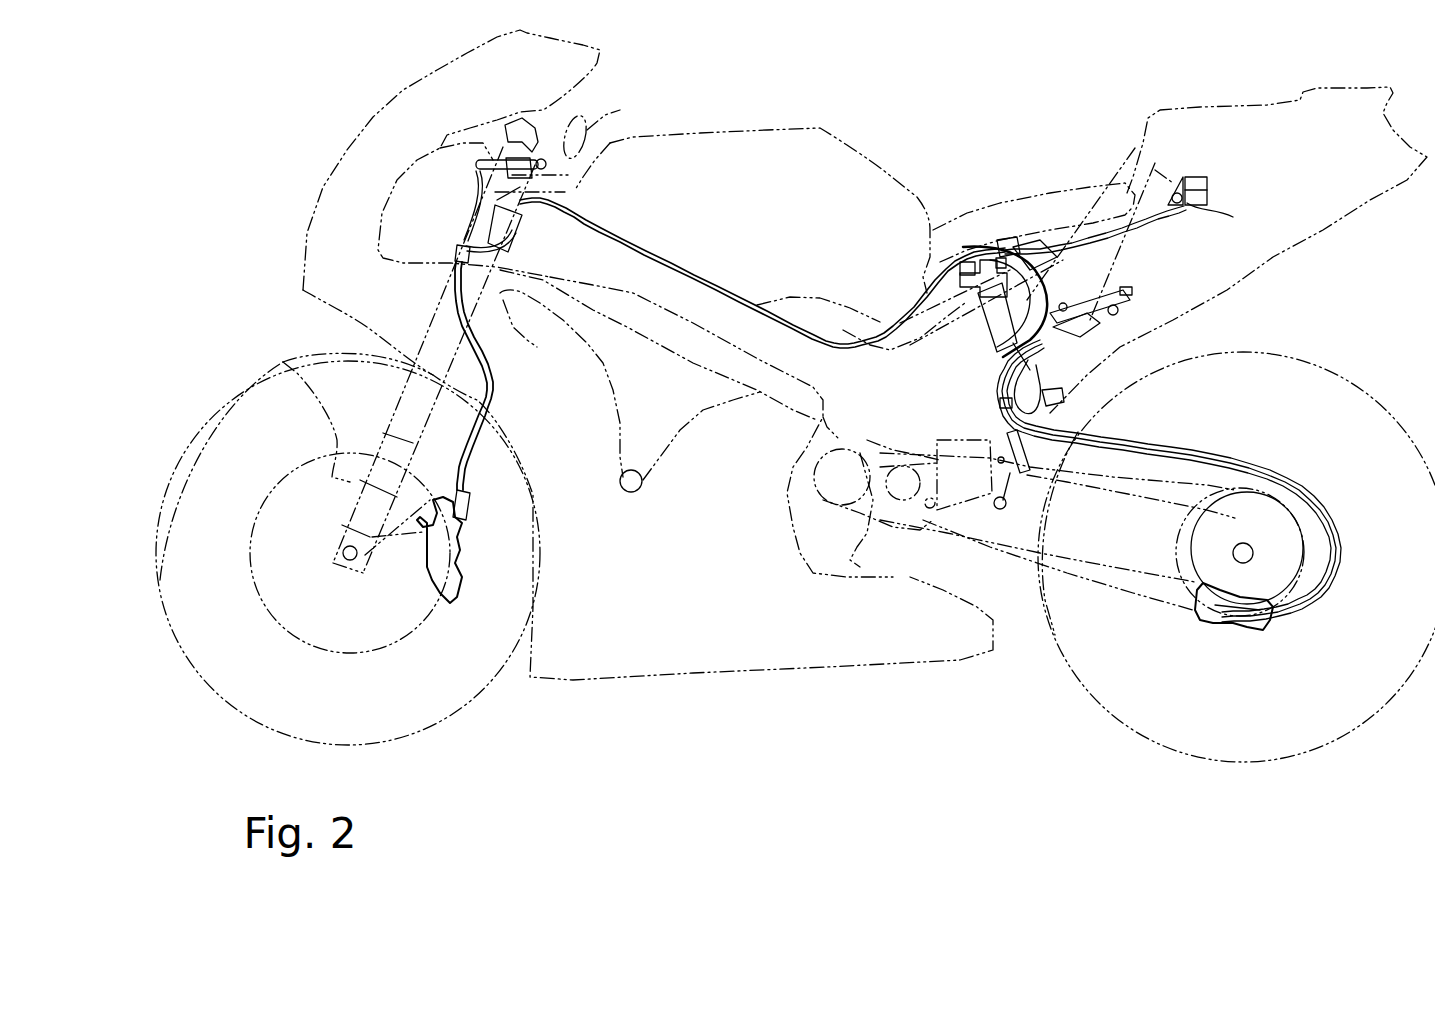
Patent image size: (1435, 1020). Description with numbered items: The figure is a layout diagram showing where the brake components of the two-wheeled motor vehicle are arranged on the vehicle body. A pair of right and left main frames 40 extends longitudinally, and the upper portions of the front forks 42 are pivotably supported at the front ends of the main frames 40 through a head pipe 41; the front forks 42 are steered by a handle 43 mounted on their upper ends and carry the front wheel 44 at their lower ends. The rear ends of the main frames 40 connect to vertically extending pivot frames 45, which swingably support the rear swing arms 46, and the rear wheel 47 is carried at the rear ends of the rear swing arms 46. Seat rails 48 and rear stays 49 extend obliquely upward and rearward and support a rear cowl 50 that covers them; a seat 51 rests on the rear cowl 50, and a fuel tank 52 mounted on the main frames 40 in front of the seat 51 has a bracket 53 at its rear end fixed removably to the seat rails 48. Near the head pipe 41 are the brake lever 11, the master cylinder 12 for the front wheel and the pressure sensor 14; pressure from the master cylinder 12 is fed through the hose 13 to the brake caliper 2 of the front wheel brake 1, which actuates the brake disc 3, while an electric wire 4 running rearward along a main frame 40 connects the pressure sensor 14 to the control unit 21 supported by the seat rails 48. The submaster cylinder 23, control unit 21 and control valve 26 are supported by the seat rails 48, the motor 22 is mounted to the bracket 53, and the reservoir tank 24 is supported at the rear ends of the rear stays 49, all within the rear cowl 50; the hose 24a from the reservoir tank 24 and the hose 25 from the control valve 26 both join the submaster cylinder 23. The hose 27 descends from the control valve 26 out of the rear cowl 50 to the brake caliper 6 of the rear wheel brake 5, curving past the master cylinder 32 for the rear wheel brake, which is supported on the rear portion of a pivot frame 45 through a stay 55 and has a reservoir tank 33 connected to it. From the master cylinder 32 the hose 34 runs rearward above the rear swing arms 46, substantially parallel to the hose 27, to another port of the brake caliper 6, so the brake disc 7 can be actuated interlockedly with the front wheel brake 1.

The front wheel brake 1 is at (482, 569).
The brake caliper 2 is at (457, 610).
The brake disc 3 is at (353, 650).
The electric wire 4 is at (843, 322).
The rear wheel brake 5 is at (1187, 648).
The brake caliper 6 is at (1230, 620).
The brake disc 7 is at (1175, 540).
The brake lever 11 is at (503, 155).
The master cylinder 12 is at (491, 158).
The hose 13 is at (493, 383).
The pressure sensor 14 is at (527, 223).
The control unit 21 is at (1060, 233).
The motor 22 is at (1003, 345).
The submaster cylinder 23 is at (967, 267).
The reservoir tank 24 is at (1207, 197).
The hose 24a is at (1233, 217).
The hose 25 is at (1000, 260).
The control valve 26 is at (1120, 307).
The hose 27 is at (1003, 405).
The master cylinder 32 is at (1020, 460).
The reservoir tank 33 is at (1050, 400).
The hose 34 is at (1230, 447).
The main frames 40 is at (707, 303).
The head pipe 41 is at (537, 347).
The front forks 42 is at (435, 313).
The handle 43 is at (610, 133).
The front wheel 44 is at (250, 393).
The pivot frames 45 is at (870, 563).
The rear swing arms 46 is at (1120, 563).
The rear wheel 47 is at (1320, 377).
The seat rails 48 is at (1140, 257).
The rear stays 49 is at (1123, 270).
The rear cowl 50 is at (1340, 220).
The seat 51 is at (1083, 180).
The fuel tank 52 is at (770, 133).
The bracket 53 is at (912, 298).
The stay 55 is at (997, 440).